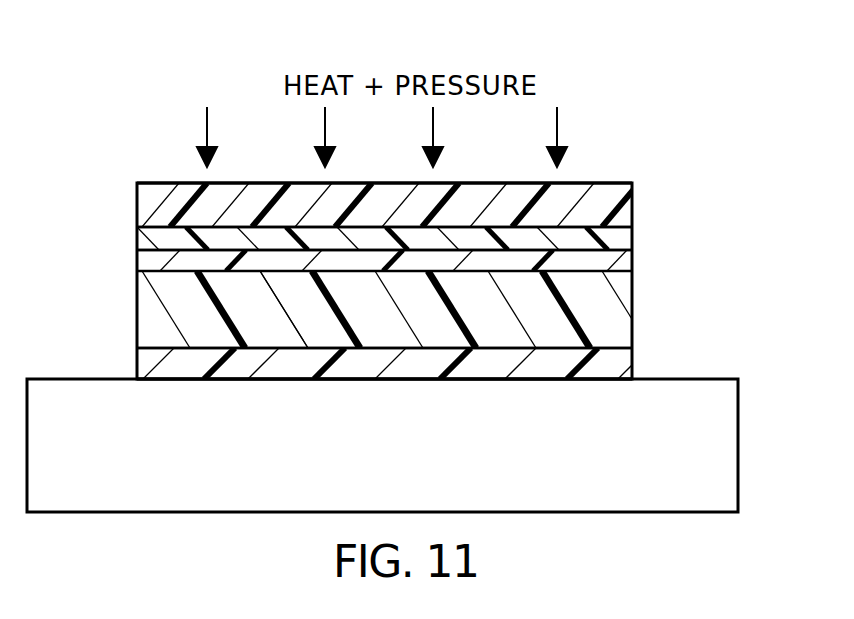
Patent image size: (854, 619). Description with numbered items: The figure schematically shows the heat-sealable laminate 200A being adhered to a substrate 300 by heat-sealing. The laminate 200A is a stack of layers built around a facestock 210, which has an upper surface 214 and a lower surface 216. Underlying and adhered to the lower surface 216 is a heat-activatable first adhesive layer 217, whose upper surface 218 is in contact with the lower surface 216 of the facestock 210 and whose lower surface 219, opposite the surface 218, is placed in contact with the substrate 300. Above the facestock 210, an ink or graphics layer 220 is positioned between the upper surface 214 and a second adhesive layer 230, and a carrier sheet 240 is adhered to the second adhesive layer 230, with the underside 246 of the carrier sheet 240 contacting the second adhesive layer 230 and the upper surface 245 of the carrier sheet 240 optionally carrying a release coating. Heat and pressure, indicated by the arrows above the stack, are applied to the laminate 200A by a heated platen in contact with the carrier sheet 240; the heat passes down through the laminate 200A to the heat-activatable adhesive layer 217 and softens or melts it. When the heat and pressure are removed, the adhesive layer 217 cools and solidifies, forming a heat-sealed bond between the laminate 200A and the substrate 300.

The heat-sealable laminate 200A is at (140, 162).
The carrier sheet 240 is at (633, 195).
The second adhesive layer 230 is at (633, 233).
The ink or graphics layer 220 is at (633, 262).
The facestock 210 is at (633, 292).
The heat-activatable first adhesive layer 217 is at (633, 360).
The upper surface of carrier sheet 245 is at (576, 183).
The underside of carrier sheet 246 is at (477, 228).
The upper surface of facestock 214 is at (183, 270).
The lower surface of facestock 216 is at (198, 348).
The upper surface of heat-activatable adhesive layer 218 is at (322, 346).
The lower surface of heat-activatable adhesive layer 219 is at (405, 380).
The substrate 300 is at (738, 405).